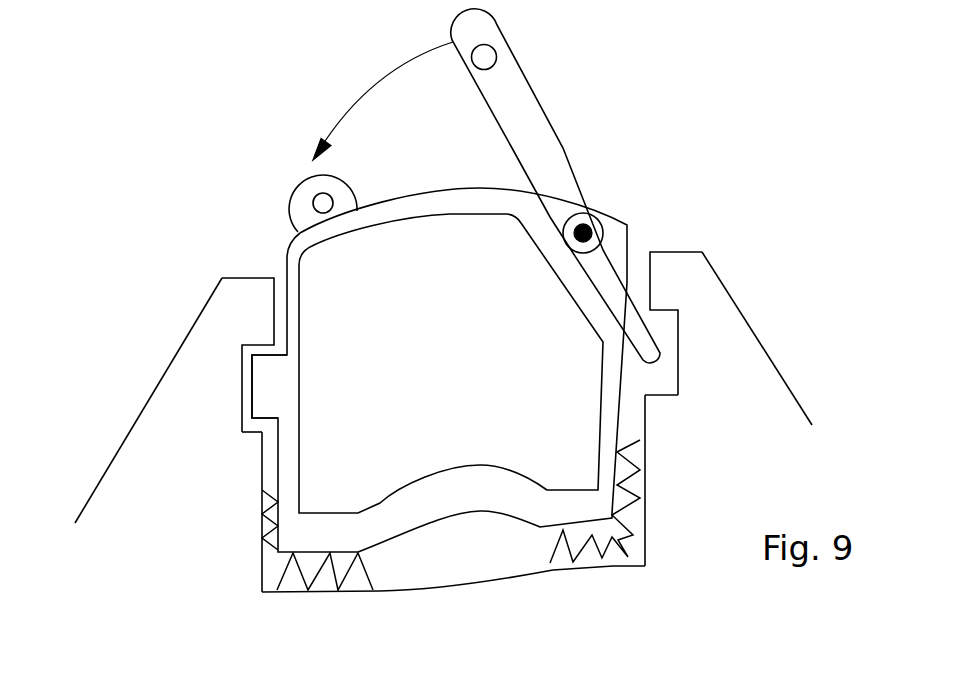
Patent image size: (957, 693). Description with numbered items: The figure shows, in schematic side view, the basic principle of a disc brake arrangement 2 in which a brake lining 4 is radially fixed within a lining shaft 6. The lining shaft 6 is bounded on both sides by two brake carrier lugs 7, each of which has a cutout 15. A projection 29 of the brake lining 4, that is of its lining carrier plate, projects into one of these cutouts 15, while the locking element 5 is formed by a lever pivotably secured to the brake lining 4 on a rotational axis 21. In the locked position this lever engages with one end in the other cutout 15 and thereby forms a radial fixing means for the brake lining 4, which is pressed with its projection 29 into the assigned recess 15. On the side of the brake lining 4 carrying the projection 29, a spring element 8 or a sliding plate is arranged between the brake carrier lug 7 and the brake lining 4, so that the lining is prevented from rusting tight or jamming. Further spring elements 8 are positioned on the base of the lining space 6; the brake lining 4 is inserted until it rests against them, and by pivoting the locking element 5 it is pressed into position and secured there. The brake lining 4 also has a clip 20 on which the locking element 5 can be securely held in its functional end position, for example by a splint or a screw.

The sample processing device 2 is at (108, 428).
The brake lining 4 is at (322, 473).
The locking element 5 is at (541, 138).
The lining shaft 6 is at (463, 547).
The brake carrier lug 7 is at (213, 313).
The spring element 8 is at (345, 573).
The cutout 15 is at (257, 423).
The clip 20 is at (313, 198).
The rotational axis 21 is at (592, 229).
The projection 29 is at (262, 373).